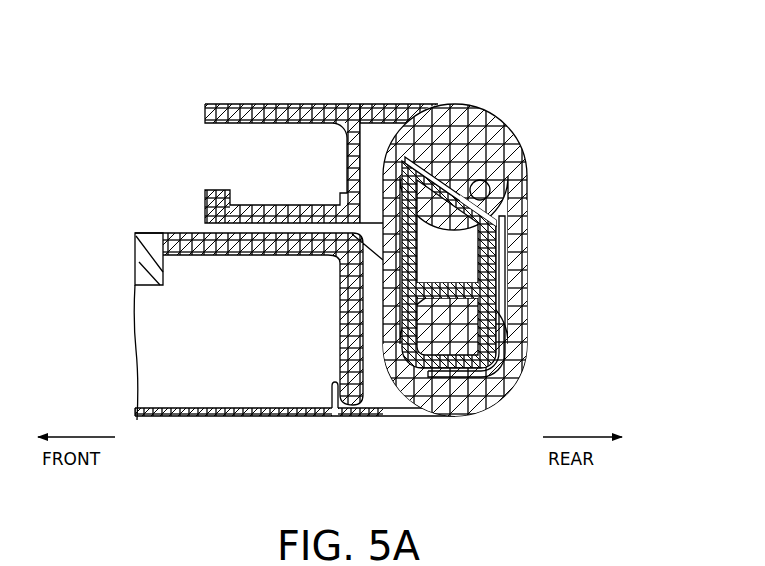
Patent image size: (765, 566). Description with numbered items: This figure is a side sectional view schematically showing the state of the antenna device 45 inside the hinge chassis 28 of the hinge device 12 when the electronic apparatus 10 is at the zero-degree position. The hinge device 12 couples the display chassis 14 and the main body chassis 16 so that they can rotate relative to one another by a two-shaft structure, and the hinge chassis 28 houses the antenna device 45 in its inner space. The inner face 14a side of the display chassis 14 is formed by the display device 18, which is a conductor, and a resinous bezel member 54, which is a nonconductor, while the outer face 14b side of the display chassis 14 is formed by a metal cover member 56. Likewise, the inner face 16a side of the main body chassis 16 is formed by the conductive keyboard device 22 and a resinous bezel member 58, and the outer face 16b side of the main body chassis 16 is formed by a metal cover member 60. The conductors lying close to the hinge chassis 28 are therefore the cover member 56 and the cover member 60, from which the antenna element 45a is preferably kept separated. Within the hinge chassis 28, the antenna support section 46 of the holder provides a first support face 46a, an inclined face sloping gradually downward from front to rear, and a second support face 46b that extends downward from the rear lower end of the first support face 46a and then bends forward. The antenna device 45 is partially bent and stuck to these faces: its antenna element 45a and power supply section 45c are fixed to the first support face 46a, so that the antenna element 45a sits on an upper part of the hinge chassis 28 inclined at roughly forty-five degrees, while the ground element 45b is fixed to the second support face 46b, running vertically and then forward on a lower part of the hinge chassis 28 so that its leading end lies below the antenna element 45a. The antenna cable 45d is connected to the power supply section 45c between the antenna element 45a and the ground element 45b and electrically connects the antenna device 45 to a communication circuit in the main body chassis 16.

The vehicle seat slide structure 10 is at (92, 31).
The hinge device 12 is at (545, 333).
The display chassis 14 is at (210, 78).
The inner face 14a is at (208, 228).
The outer face 14b is at (246, 104).
The main body chassis 16 is at (165, 425).
The inner face 16a is at (148, 234).
The outer face 16b is at (270, 418).
The display device 18 is at (215, 190).
The keyboard device 22 is at (148, 258).
The hinge chassis 28 is at (417, 398).
The antenna device 45 is at (448, 176).
The antenna element 45a is at (437, 170).
The ground element 45b is at (506, 356).
The power supply section 45c is at (503, 214).
The antenna cable 45d is at (486, 184).
The antenna support section 46 is at (466, 279).
The first support face 46a is at (497, 212).
The second support face 46b is at (490, 291).
The bezel member 54 is at (290, 212).
The cover member 56 is at (362, 147).
The bezel member 58 is at (262, 255).
The cover member 60 is at (220, 412).